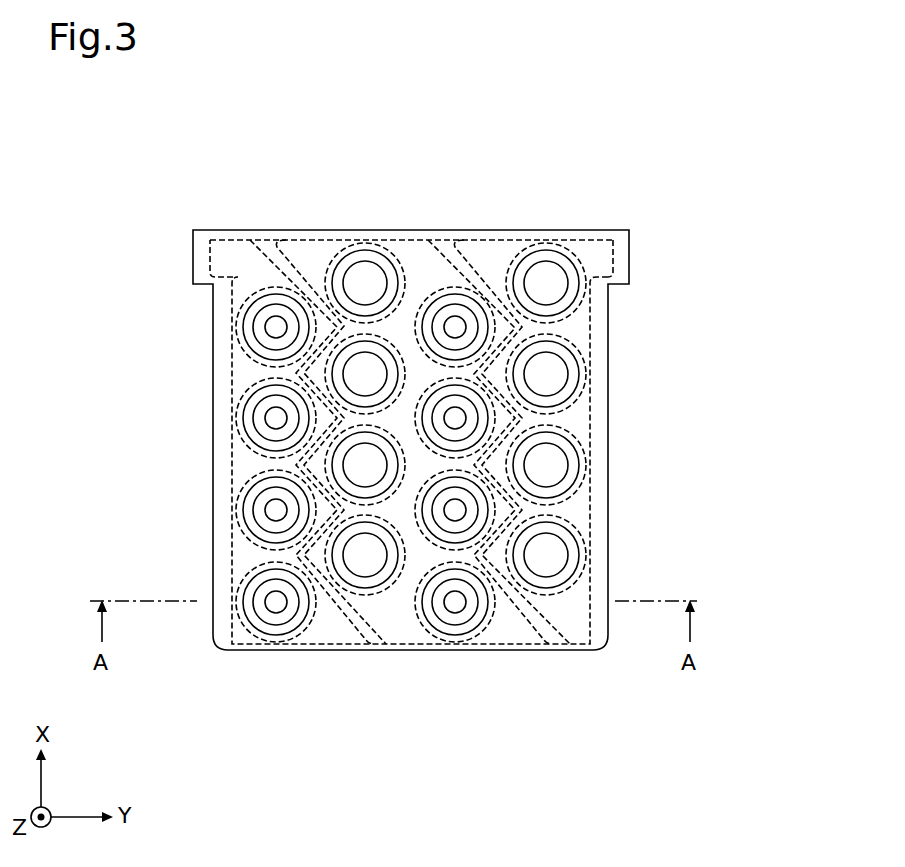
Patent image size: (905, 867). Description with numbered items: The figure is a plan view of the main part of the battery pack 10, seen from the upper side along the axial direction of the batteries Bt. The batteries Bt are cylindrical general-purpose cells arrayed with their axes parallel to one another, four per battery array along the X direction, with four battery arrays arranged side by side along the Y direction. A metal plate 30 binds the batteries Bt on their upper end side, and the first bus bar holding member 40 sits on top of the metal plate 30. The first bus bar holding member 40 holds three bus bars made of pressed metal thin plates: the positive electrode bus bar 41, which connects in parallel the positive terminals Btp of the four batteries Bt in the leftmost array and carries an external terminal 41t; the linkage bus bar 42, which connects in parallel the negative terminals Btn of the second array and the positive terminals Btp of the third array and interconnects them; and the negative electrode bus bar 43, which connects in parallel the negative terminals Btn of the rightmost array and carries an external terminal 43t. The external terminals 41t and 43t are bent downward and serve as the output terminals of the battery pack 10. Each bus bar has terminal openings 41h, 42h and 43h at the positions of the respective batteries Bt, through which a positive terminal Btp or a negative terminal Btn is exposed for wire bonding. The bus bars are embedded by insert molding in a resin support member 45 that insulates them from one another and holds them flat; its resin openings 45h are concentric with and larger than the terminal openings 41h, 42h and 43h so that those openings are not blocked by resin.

The battery pack 10 is at (533, 184).
The metal plate 30 is at (479, 440).
The first bus bar holding member 40 is at (608, 338).
The positive electrode bus bar 41 is at (236, 240).
The terminal opening 41h is at (263, 582).
The external terminal 41t is at (210, 260).
The linkage bus bar 42 is at (381, 246).
The terminal opening 42h is at (338, 265).
The negative electrode bus bar 43 is at (495, 240).
The terminal opening 43h is at (578, 277).
The external terminal 43t is at (613, 257).
The resin support member 45 is at (592, 415).
The resin opening 45h is at (400, 273).
The battery Bt is at (293, 457).
The negative terminal Btn is at (355, 470).
The positive terminal Btp is at (273, 598).